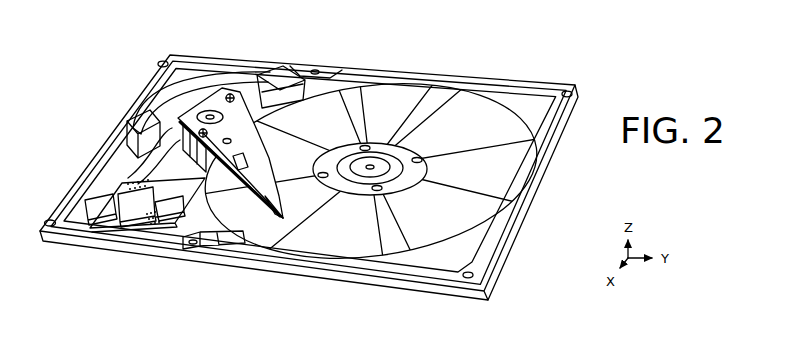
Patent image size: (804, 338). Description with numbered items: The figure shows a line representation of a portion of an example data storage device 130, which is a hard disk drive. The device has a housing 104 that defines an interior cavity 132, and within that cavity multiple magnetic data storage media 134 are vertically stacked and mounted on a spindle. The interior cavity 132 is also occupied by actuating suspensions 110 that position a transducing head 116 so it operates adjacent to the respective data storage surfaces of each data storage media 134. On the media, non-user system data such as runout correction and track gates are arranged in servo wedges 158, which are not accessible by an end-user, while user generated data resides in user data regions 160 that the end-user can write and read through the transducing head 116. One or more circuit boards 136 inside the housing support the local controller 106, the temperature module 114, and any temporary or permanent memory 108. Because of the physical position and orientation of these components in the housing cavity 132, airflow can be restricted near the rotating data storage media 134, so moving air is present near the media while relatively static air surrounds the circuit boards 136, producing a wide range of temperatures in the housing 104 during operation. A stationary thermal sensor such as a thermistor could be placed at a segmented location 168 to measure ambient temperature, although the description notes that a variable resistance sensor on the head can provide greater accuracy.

The data storage device 130 is at (120, 47).
The housing 104 is at (509, 258).
The interior cavity 132 is at (516, 101).
The magnetic data storage media 134 is at (383, 87).
The servo wedges 158 is at (352, 94).
The user data regions 160 is at (338, 130).
The memory 108 is at (407, 146).
The actuating suspensions 110 is at (283, 167).
The transducing head 116 is at (285, 216).
The circuit boards 136 is at (117, 174).
The local controller 106 is at (97, 206).
The temperature module 114 is at (165, 221).
The segmented location 168 is at (148, 229).